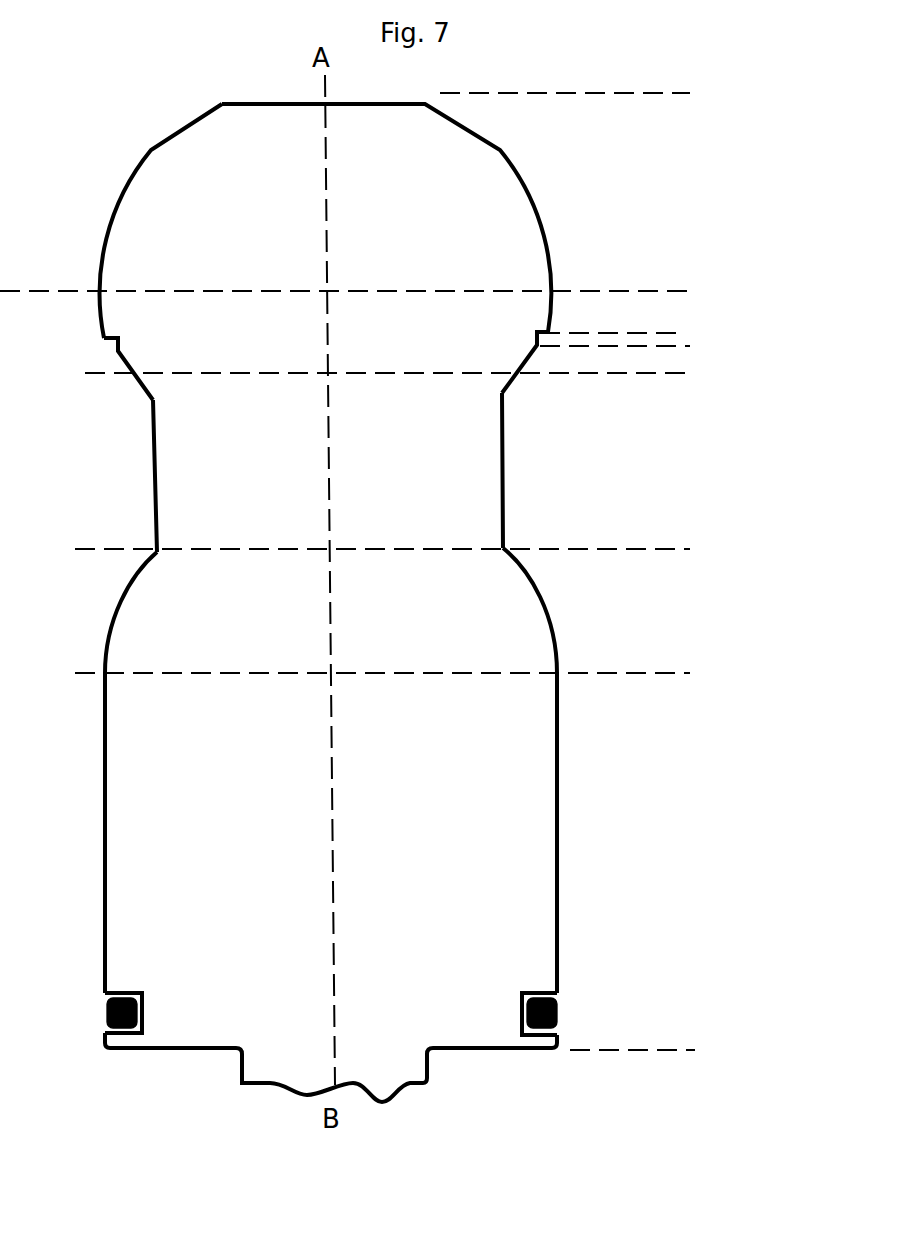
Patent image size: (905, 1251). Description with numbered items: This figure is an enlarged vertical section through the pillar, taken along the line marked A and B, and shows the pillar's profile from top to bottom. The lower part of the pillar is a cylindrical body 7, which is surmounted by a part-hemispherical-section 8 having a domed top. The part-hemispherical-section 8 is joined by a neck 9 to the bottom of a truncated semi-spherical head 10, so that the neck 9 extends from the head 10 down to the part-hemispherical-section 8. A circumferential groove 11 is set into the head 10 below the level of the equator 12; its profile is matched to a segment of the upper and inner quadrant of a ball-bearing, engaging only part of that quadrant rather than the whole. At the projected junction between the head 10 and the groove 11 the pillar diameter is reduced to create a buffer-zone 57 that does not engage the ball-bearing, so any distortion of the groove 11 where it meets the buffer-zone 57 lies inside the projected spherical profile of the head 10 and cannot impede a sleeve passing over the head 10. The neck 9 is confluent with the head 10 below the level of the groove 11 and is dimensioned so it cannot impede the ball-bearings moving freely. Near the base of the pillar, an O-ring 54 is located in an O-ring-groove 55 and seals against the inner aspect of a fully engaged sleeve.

The head 10 is at (691, 366).
The equator 12 is at (593, 288).
The buffer-zone 57 is at (593, 338).
The circumferential groove 11 is at (527, 362).
The neck 9 is at (694, 372).
The part-hemispherical-section 8 is at (694, 551).
The cylindrical body 7 is at (697, 677).
The O-ring-groove 55 is at (542, 995).
The O-ring 54 is at (557, 1013).